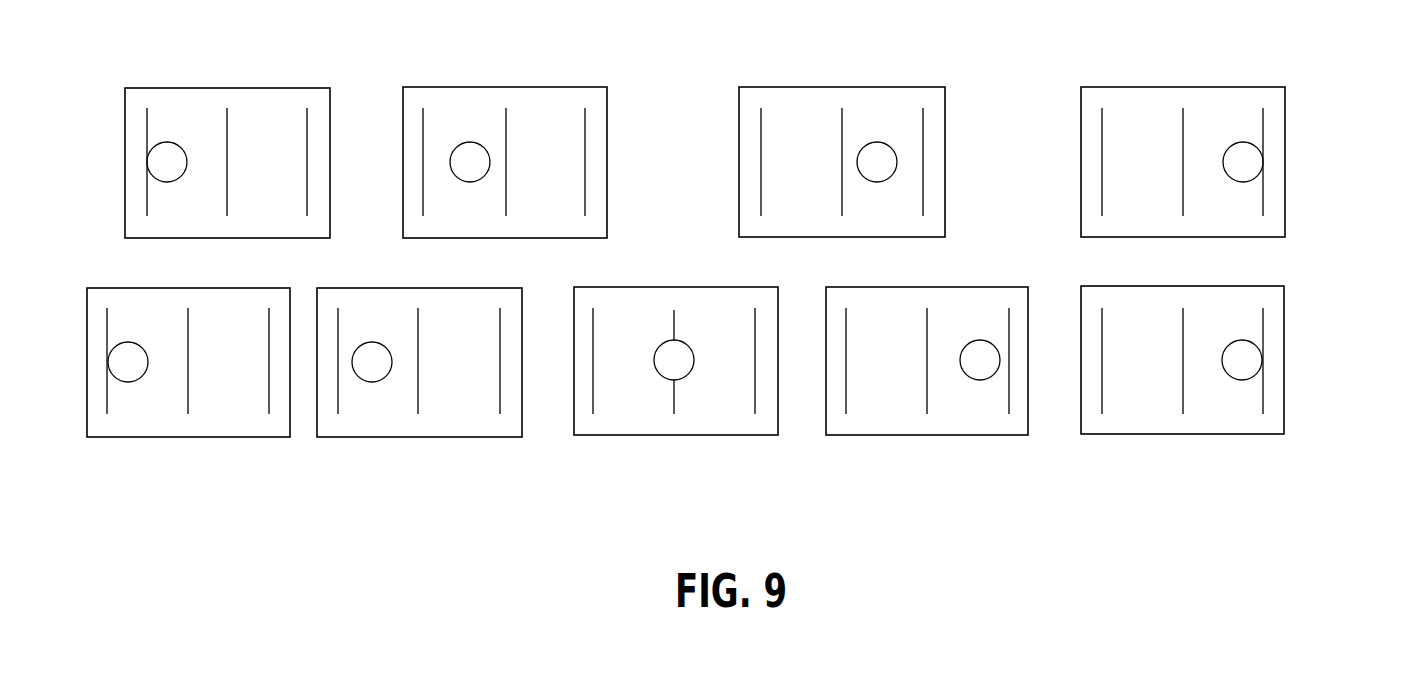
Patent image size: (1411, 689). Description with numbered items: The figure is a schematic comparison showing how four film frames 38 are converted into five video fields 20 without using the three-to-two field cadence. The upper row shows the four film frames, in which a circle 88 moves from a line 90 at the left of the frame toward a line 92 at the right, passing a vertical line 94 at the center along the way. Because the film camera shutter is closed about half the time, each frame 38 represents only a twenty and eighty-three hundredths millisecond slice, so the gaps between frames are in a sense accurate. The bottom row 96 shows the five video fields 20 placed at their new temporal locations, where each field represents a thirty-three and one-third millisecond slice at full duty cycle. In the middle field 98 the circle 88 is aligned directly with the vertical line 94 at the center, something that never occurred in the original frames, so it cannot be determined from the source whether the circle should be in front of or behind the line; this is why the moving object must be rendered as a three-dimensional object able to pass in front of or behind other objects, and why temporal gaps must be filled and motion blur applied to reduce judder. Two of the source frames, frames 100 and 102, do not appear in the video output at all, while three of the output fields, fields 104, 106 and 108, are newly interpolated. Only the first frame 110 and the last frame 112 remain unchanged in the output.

The video field 20 is at (160, 438).
The film frame 38 is at (768, 264).
The circle 88 is at (168, 142).
The line 90 is at (140, 127).
The line 92 is at (305, 118).
The vertical line 94 is at (230, 128).
The bottom row 96 is at (1325, 353).
The middle field 98 is at (1097, 264).
The frame 100 is at (553, 87).
The frame 102 is at (880, 87).
The output field 104 is at (418, 437).
The output field 106 is at (700, 437).
The output field 108 is at (960, 437).
The first frame 110 is at (320, 87).
The last frame 112 is at (1183, 87).